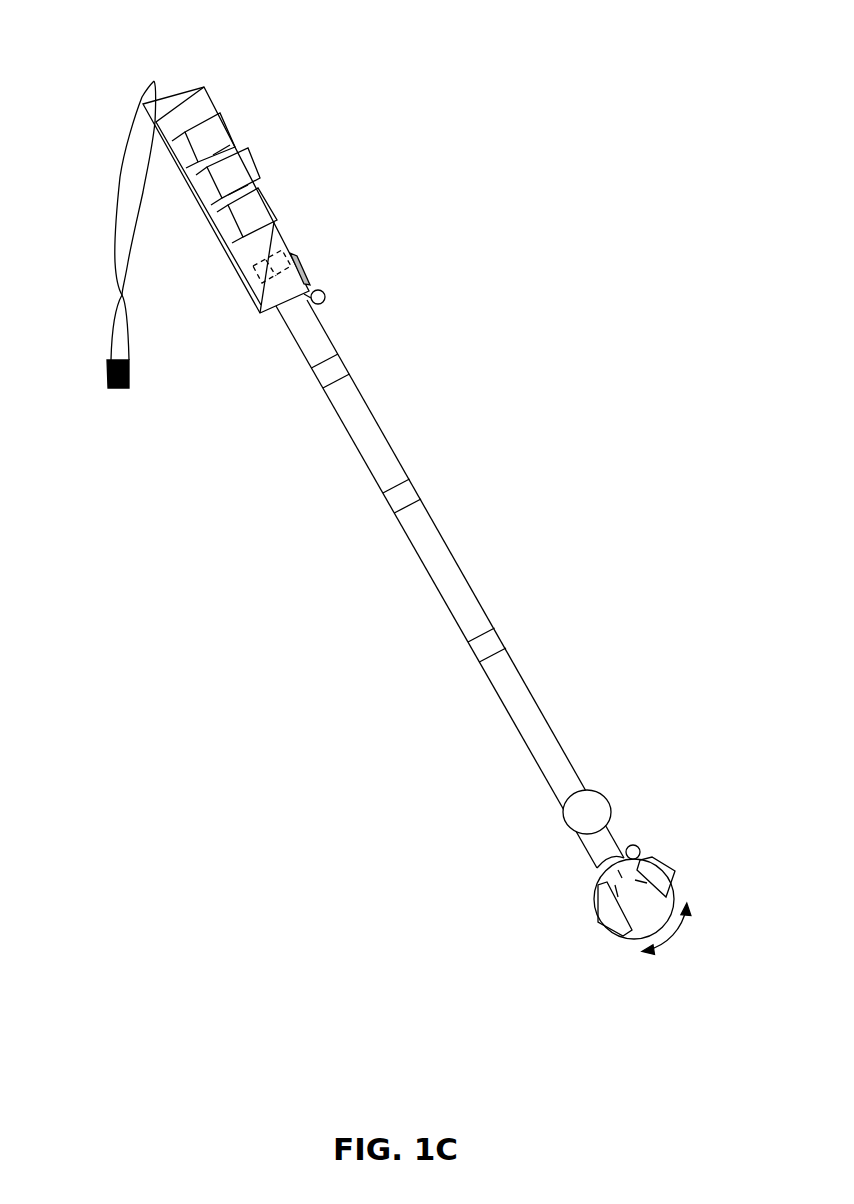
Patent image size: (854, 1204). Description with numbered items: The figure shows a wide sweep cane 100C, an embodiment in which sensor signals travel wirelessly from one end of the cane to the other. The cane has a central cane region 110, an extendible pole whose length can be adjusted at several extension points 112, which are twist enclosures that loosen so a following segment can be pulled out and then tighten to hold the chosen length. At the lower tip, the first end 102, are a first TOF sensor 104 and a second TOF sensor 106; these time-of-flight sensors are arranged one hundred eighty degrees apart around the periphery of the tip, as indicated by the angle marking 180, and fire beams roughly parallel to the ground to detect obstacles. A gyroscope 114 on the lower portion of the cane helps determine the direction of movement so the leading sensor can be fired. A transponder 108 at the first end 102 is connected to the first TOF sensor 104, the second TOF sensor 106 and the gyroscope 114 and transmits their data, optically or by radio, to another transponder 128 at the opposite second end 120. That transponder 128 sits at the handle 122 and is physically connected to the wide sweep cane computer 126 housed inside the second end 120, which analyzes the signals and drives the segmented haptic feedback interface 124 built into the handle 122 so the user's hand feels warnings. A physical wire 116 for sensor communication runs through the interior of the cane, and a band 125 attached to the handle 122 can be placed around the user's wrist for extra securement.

The wide sweep cane 100C is at (230, 815).
The first end 102 is at (631, 978).
The first TOF sensor 104 is at (657, 868).
The second TOF sensor 106 is at (607, 905).
The transponder 108 is at (636, 845).
The central cane region 110 is at (497, 482).
The extension points 112 is at (493, 637).
The gyroscope 114 is at (566, 813).
The physical wire 116 is at (357, 418).
The second end 120 is at (242, 86).
The handle 122 is at (288, 228).
The haptic feedback interface 124 is at (268, 192).
The band 125 is at (118, 210).
The wide sweep cane computer 126 is at (300, 258).
The transponder 128 is at (325, 297).
The rotation angle 180 is at (672, 937).